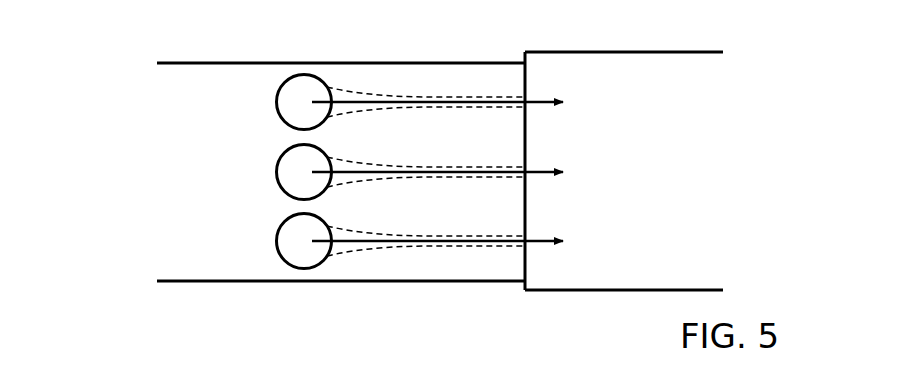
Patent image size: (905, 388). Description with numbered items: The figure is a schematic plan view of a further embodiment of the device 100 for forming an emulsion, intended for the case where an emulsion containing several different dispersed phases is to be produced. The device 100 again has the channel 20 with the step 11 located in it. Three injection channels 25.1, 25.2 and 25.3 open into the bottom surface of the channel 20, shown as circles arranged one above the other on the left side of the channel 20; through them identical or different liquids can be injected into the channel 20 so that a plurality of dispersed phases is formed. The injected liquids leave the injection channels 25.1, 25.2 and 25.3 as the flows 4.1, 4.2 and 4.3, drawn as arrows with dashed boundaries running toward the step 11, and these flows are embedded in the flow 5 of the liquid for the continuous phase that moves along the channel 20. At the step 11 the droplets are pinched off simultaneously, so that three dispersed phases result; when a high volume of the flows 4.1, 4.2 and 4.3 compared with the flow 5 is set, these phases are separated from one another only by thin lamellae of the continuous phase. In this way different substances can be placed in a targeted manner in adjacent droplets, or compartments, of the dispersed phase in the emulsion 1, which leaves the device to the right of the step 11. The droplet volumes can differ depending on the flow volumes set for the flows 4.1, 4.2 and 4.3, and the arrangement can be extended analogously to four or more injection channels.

The device 100 is at (157, 123).
The channel 20 is at (232, 78).
The emulsion 1 is at (573, 275).
The step 11 is at (525, 215).
The injection channel 25.1 is at (288, 104).
The injection channel 25.2 is at (288, 172).
The injection channel 25.3 is at (288, 255).
The flow 4.1 is at (408, 98).
The flow 4.2 is at (438, 167).
The flow 4.3 is at (438, 238).
The flow of the liquid for the continuous phase 5 is at (462, 80).